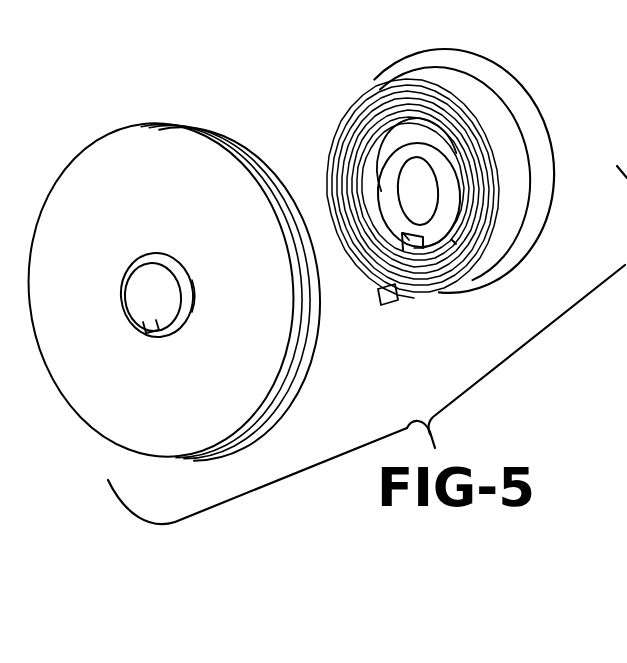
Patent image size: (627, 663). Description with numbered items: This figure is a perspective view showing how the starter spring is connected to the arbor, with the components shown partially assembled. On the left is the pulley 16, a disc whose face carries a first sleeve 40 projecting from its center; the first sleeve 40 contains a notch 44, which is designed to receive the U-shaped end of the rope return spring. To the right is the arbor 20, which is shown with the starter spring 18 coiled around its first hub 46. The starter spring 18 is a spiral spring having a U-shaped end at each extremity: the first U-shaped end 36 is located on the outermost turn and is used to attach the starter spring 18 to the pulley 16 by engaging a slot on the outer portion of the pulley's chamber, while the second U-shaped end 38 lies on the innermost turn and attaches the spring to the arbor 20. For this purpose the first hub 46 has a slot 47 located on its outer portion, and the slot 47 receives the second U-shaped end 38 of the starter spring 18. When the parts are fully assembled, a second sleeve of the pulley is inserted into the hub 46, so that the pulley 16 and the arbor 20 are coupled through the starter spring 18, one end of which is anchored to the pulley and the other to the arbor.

The pulley 16 is at (196, 116).
The starter spring 18 is at (366, 92).
The arbor 20 is at (522, 97).
The first U-shaped end 36 is at (386, 306).
The second U-shaped end 38 is at (402, 240).
The first sleeve 40 is at (180, 310).
The notch 44 is at (143, 327).
The first hub 46 is at (377, 200).
The slot 47 is at (397, 232).